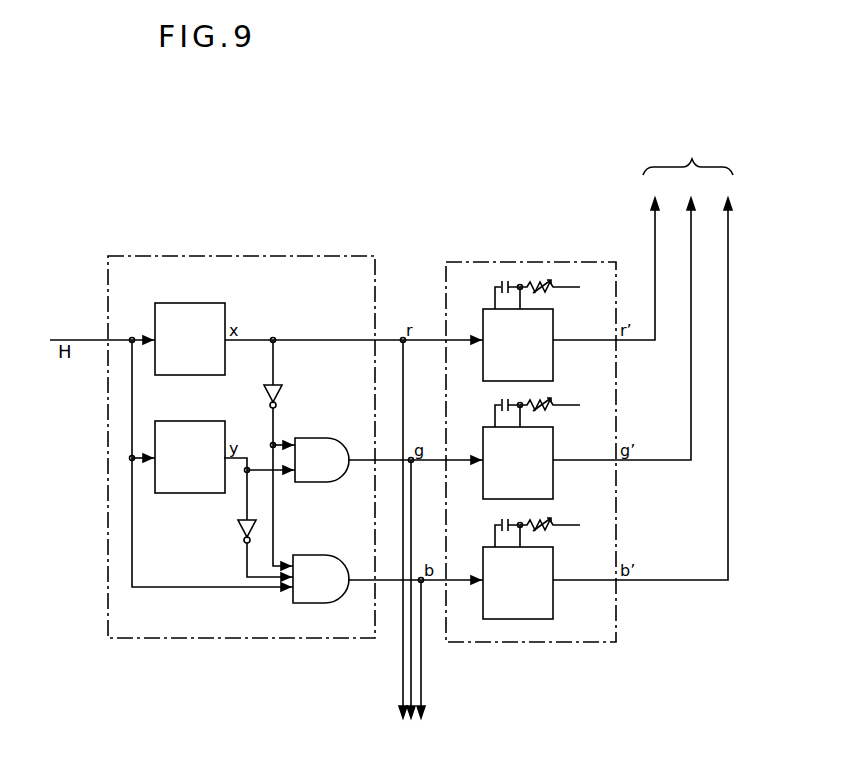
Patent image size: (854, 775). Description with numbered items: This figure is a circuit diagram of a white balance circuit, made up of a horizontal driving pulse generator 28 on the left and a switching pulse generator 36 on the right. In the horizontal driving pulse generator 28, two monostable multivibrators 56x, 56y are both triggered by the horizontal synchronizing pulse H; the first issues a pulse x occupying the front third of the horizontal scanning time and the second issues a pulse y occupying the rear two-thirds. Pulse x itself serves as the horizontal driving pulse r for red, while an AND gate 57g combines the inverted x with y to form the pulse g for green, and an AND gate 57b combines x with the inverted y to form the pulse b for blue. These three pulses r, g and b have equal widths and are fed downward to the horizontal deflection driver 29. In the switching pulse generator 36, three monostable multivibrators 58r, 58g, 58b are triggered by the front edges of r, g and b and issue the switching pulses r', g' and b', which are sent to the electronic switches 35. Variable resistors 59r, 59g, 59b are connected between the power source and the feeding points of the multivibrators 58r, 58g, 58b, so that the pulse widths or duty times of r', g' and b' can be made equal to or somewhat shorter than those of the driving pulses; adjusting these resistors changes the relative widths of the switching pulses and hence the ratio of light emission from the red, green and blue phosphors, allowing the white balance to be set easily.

The horizontal driving pulse generator 28 is at (263, 263).
The switching pulse generator 36 is at (525, 265).
The monostable multivibrator 56x is at (182, 318).
The monostable multivibrator 56y is at (180, 436).
The AND gate 57g is at (317, 451).
The AND gate 57b is at (317, 567).
The monostable multivibrator 58r is at (553, 378).
The monostable multivibrator 58g is at (553, 496).
The monostable multivibrator 58b is at (553, 617).
The variable resistor 59r is at (571, 305).
The variable resistor 59g is at (571, 423).
The variable resistor 59b is at (571, 543).
The horizontal deflection driver 29 is at (411, 547).
The electronic switches 35 is at (643, 298).